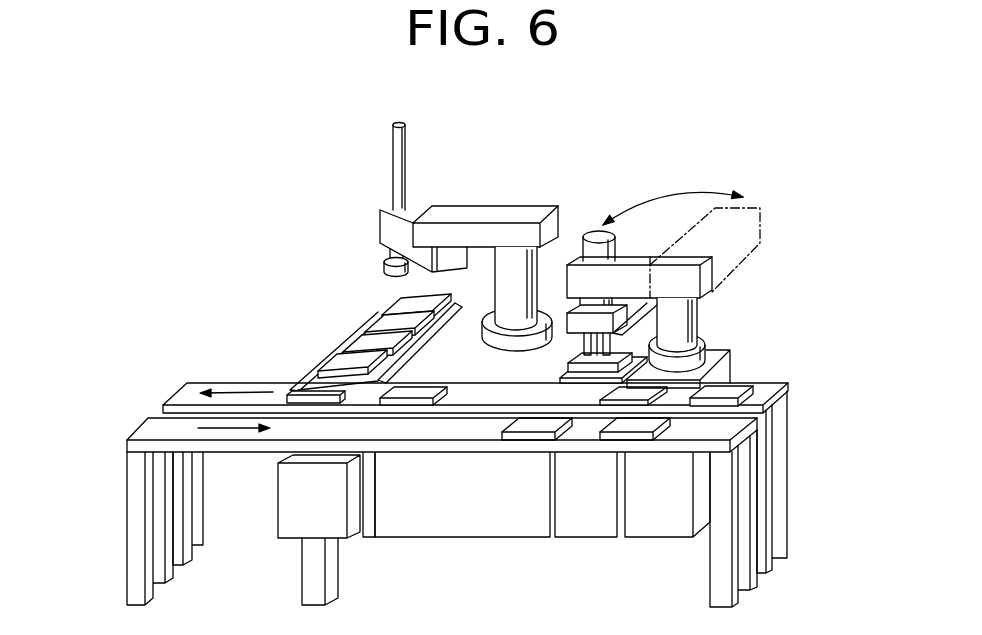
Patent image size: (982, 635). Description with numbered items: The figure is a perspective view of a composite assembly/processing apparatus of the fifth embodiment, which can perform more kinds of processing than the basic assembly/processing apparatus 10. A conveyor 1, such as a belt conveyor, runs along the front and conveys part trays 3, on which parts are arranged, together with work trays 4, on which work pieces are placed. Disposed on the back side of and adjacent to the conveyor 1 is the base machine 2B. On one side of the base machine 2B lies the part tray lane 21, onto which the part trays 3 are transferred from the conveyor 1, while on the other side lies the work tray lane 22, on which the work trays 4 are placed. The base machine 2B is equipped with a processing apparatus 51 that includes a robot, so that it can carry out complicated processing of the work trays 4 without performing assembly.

The conveyor 1 is at (207, 370).
The assembly/processing apparatus 10 is at (315, 250).
The base machine 2B is at (495, 198).
The processing apparatus 51 is at (702, 279).
The work tray lane 22 is at (655, 323).
The part tray lane 21 is at (323, 370).
The part tray 3 is at (362, 343).
The work tray 4 is at (618, 354).